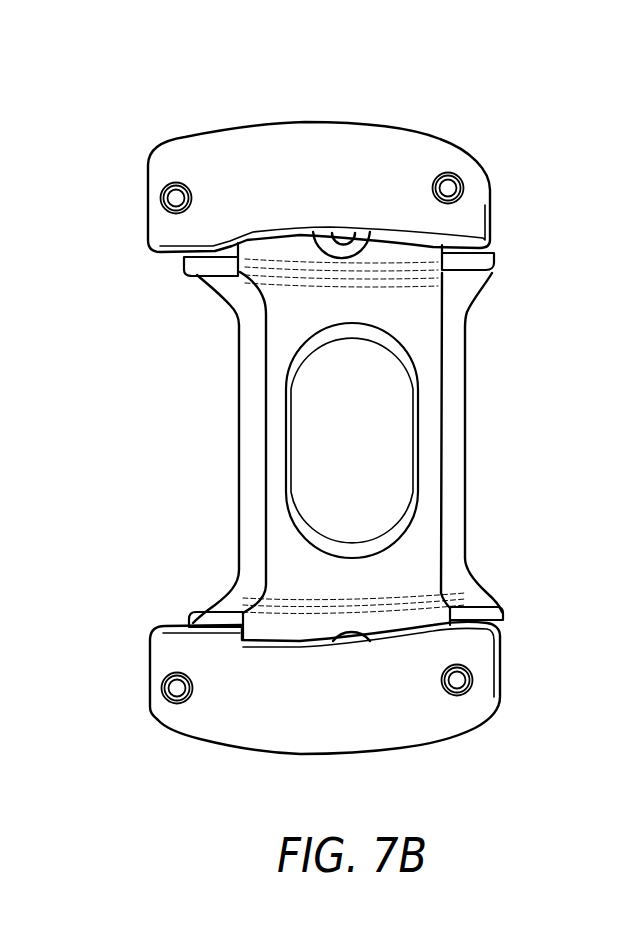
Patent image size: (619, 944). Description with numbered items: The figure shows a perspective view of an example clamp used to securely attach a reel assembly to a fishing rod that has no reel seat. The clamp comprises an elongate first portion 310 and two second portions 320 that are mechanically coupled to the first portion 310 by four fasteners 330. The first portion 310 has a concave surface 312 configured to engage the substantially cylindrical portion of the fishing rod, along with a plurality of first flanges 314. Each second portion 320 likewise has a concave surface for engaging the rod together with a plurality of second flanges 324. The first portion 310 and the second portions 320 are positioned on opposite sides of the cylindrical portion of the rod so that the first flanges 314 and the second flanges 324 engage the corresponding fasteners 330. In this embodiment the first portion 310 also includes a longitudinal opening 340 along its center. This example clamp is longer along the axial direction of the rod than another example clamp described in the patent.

The first portion 310 is at (453, 463).
The concave surface 312 is at (283, 544).
The first flanges 314 is at (197, 268).
The second portions 320 is at (347, 140).
The second flanges 324 is at (163, 225).
The fasteners 330 is at (168, 193).
The longitudinal opening 340 is at (376, 403).